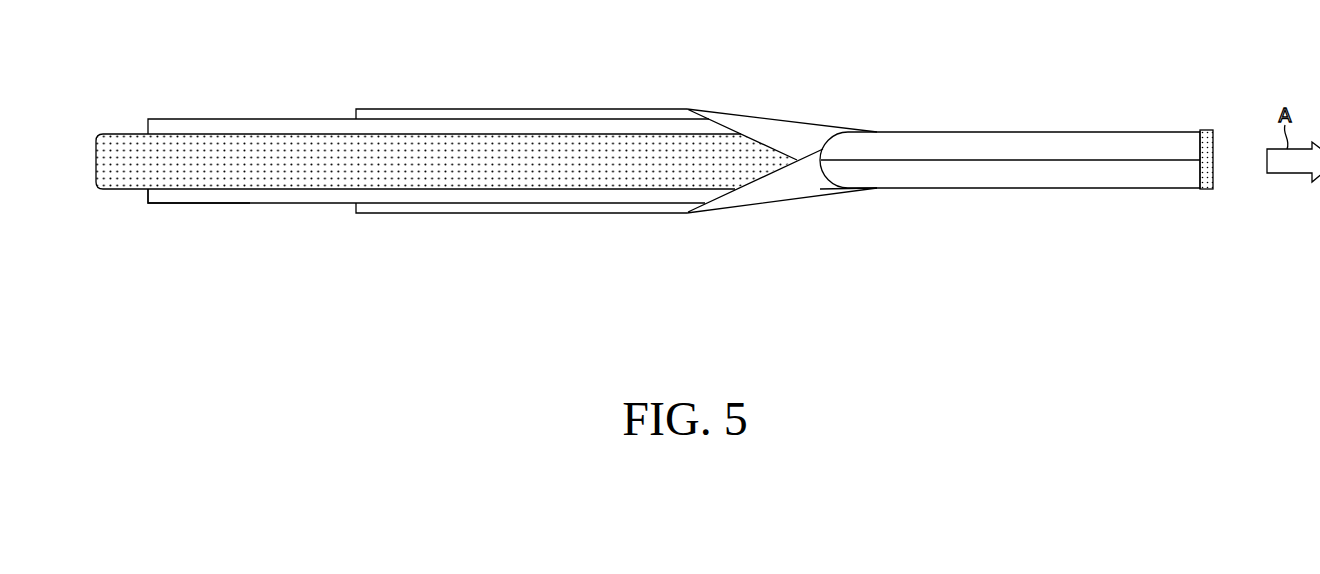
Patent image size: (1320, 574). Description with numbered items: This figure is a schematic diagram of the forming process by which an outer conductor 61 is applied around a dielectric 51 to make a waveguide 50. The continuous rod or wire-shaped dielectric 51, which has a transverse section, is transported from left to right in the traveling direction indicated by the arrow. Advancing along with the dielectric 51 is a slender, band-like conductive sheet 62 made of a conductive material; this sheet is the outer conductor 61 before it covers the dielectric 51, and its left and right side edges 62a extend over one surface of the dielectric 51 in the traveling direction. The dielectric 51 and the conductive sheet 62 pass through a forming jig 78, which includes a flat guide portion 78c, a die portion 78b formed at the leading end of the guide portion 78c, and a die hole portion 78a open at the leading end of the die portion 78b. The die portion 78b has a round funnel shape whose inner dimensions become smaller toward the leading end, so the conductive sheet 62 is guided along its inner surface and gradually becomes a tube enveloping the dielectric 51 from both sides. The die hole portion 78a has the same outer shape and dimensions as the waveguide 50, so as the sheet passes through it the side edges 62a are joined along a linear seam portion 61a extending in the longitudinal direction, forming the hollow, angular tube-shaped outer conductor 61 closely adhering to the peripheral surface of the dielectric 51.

The waveguide 50 is at (661, 167).
The dielectric 51 is at (327, 182).
The outer conductor 61 is at (1099, 143).
The seam portion 61a is at (1014, 160).
The conductive sheet 62 is at (197, 119).
The side edges 62a is at (193, 203).
The forming jig 78 is at (762, 203).
The die hole portion 78a is at (858, 190).
The die portion 78b is at (788, 118).
The guide portion 78c is at (537, 213).